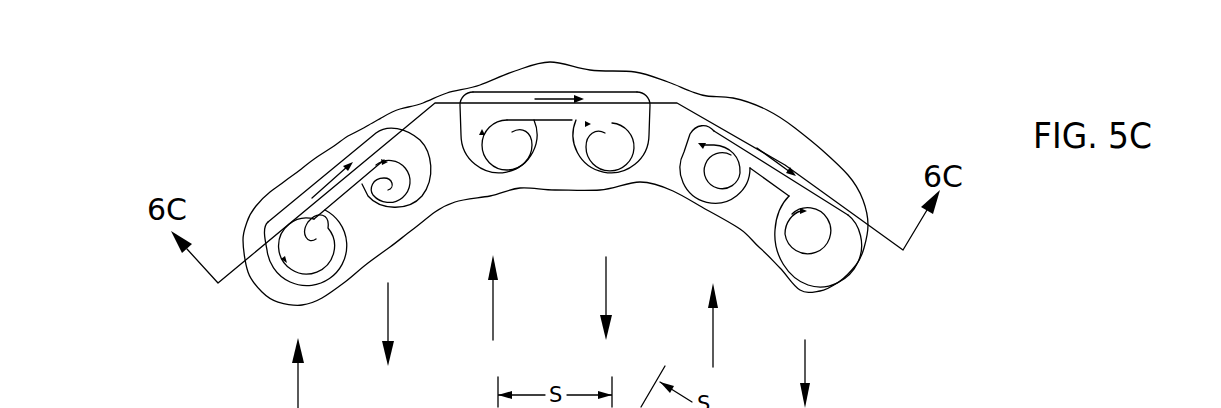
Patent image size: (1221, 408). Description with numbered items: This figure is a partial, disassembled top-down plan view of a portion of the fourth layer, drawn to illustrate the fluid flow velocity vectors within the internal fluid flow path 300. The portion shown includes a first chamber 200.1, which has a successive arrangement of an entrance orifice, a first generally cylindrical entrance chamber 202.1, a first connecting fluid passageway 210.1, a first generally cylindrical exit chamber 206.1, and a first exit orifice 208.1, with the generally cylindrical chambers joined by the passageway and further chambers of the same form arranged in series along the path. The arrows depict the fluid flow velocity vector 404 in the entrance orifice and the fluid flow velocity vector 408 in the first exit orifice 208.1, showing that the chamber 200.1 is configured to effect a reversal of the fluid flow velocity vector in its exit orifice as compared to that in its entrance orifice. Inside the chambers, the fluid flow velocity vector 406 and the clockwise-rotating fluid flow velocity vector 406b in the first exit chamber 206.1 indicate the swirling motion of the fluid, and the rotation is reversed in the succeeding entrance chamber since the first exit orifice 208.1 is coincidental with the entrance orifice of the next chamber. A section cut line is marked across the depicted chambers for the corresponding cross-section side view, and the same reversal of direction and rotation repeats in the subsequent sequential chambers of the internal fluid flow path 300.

The first chamber 200.1 is at (270, 203).
The first connecting fluid passageway 210.1 is at (309, 172).
The fluid flow velocity vector 406 is at (335, 182).
The fluid flow velocity vector (clockwise rotation) 406b is at (424, 178).
The internal fluid flow path 300 is at (244, 216).
The first generally cylindrical entrance chamber 202.1 is at (273, 273).
The first generally cylindrical exit chamber 206.1 is at (384, 205).
The fluid flow velocity vector 408 is at (388, 317).
The fluid flow velocity vector 404 is at (297, 393).
The first exit orifice 208.1 is at (355, 401).